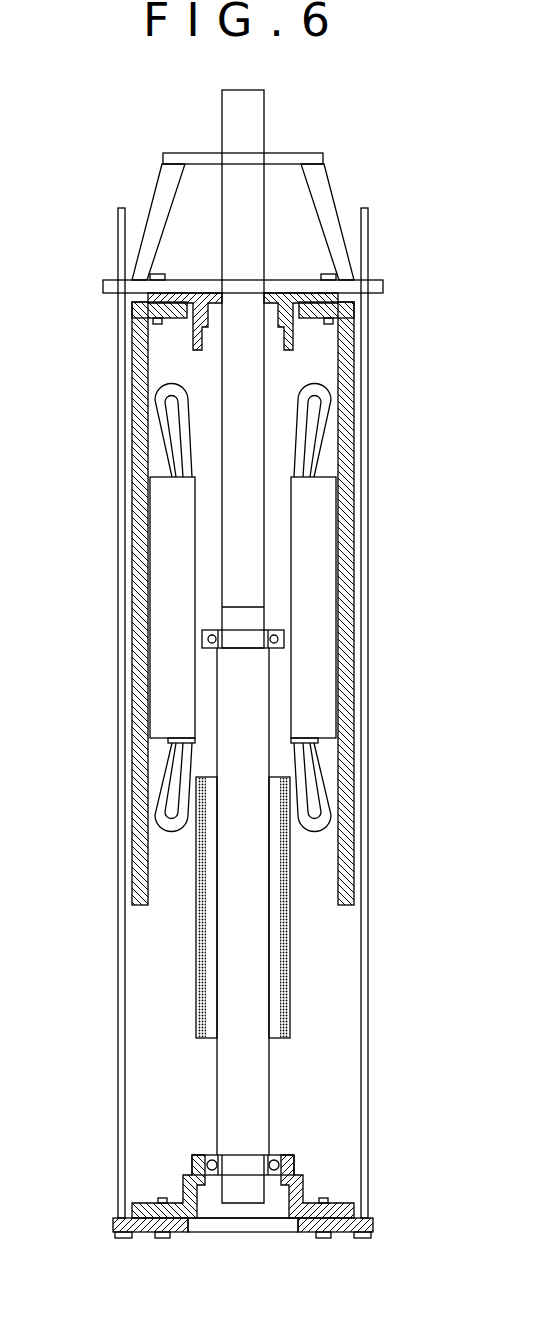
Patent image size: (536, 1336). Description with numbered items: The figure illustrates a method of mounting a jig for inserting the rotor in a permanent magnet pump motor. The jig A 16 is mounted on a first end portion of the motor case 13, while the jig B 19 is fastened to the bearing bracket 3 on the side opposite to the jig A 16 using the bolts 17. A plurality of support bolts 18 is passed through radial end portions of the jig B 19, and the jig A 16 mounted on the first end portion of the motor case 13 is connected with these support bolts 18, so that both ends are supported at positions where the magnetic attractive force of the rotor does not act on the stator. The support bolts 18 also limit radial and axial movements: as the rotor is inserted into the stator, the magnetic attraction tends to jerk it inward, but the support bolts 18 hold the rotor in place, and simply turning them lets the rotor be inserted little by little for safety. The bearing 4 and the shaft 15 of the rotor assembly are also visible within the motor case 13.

The bearing bracket 3 is at (337, 1207).
The bearing 4 is at (278, 636).
The motor case 13 is at (133, 756).
The rotary shaft 15 is at (228, 117).
The jig A 16 is at (323, 187).
The bolts 17 is at (147, 1240).
The support bolts 18 is at (120, 1006).
The jig B 19 is at (368, 1228).